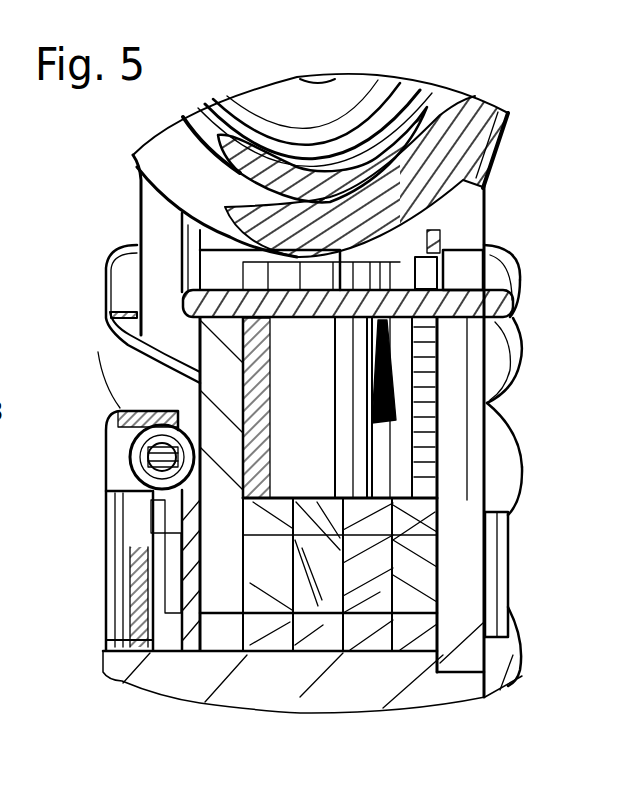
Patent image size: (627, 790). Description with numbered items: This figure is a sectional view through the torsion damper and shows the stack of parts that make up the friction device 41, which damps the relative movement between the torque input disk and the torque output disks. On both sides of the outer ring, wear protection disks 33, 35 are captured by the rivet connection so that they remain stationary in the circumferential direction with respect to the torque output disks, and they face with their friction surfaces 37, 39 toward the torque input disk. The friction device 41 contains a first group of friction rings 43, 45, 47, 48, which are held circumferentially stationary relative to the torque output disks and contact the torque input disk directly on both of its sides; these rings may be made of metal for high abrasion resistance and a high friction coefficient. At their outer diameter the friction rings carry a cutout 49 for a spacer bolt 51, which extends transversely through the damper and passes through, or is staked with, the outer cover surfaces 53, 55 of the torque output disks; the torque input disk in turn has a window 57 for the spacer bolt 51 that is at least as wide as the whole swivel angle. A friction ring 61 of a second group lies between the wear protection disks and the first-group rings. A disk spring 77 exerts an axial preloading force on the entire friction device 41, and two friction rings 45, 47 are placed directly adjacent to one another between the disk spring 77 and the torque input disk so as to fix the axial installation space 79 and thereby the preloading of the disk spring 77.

The wear protection disk 33 is at (150, 578).
The wear protection disk 35 is at (488, 560).
The friction surface 37 is at (253, 553).
The friction surface 39 is at (408, 510).
The friction device 41 is at (497, 333).
The friction ring 43 is at (182, 318).
The friction ring 45 is at (490, 330).
The friction ring 47 is at (448, 360).
The friction ring 48 is at (435, 512).
The cutout 49 is at (247, 278).
The spacer bolt 51 is at (510, 255).
The outer cover surface 53 is at (193, 399).
The outer cover surface 55 is at (510, 490).
The window 57 is at (492, 487).
The friction ring 61 is at (458, 428).
The disk spring 77 is at (405, 392).
The axial installation space 79 is at (440, 229).